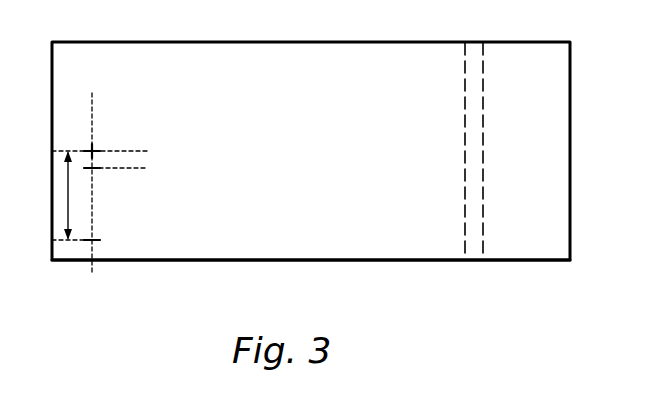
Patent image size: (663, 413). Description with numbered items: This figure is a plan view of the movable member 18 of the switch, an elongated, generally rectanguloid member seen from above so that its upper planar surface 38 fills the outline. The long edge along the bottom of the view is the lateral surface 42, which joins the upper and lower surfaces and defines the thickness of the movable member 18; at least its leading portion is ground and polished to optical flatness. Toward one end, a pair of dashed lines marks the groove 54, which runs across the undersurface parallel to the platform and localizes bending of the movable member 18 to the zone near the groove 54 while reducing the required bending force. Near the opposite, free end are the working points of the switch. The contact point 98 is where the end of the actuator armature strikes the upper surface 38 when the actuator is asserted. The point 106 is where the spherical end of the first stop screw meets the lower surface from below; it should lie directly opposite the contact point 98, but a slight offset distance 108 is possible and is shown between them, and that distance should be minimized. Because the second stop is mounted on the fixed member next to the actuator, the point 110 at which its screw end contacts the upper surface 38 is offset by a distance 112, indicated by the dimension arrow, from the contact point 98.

The movable member 18 is at (401, 262).
The upper planar surface 38 is at (336, 149).
The lateral surface 42 is at (229, 262).
The groove 54 is at (483, 205).
The contact point 98 is at (93, 150).
The point 106 is at (93, 170).
The offset distance 108 is at (148, 151).
The point 110 is at (93, 238).
The distance 112 is at (70, 195).